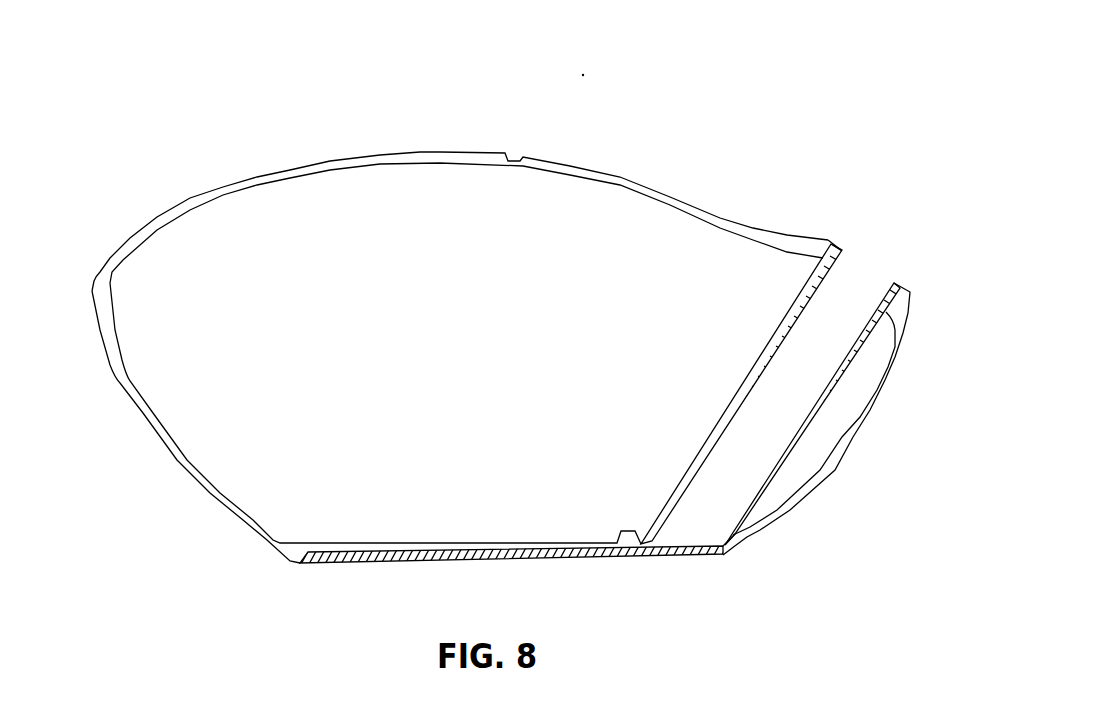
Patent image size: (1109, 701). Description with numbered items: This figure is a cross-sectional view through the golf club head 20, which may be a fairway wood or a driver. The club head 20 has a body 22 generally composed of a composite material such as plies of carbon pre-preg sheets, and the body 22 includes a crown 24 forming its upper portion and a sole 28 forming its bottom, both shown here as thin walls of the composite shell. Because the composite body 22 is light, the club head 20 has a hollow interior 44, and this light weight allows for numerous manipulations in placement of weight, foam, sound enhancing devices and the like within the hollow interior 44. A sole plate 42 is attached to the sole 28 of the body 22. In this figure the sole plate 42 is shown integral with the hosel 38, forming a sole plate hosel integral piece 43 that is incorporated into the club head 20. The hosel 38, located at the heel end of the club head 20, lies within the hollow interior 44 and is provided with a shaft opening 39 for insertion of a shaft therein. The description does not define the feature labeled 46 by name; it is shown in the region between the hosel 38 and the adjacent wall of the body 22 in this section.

The golf club head 20 is at (667, 142).
The body 22 is at (817, 480).
The crown 24 is at (308, 166).
The sole 28 is at (287, 558).
The hosel 38 is at (835, 378).
The shaft opening 39 is at (902, 256).
The sole plate 42 is at (553, 564).
The sole plate hosel integral piece 43 is at (703, 520).
The hollow interior 44 is at (463, 205).
The face wall 46 is at (855, 262).